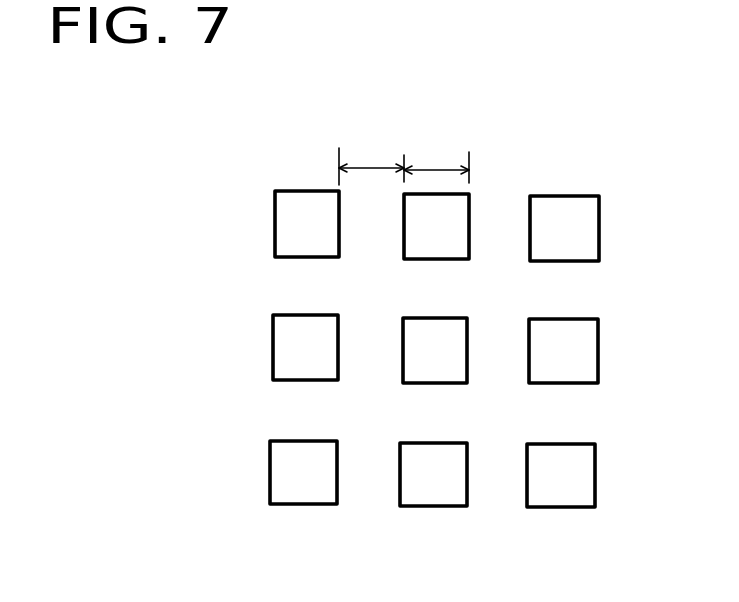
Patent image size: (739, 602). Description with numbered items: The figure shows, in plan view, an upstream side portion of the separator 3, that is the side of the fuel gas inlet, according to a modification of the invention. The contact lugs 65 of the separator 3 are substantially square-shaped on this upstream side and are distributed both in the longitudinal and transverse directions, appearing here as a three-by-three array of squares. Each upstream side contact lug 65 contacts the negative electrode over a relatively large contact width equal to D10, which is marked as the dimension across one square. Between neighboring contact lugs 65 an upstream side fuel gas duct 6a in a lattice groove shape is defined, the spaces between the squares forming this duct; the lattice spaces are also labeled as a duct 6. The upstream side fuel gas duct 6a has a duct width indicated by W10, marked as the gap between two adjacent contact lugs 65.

The separator 3 is at (429, 351).
The gap between elements 6 is at (570, 283).
The upstream side fuel gas duct 6a is at (570, 307).
The contact lug 65 is at (292, 225).
The duct width W10 is at (363, 166).
The contact width D10 is at (442, 169).